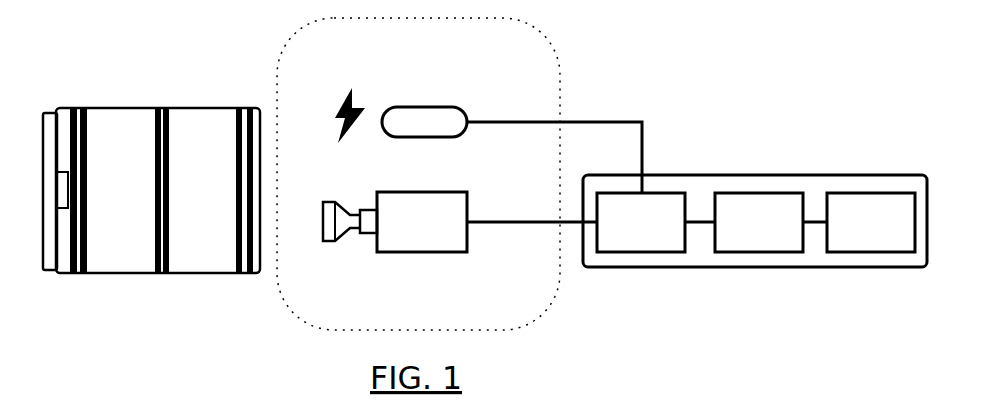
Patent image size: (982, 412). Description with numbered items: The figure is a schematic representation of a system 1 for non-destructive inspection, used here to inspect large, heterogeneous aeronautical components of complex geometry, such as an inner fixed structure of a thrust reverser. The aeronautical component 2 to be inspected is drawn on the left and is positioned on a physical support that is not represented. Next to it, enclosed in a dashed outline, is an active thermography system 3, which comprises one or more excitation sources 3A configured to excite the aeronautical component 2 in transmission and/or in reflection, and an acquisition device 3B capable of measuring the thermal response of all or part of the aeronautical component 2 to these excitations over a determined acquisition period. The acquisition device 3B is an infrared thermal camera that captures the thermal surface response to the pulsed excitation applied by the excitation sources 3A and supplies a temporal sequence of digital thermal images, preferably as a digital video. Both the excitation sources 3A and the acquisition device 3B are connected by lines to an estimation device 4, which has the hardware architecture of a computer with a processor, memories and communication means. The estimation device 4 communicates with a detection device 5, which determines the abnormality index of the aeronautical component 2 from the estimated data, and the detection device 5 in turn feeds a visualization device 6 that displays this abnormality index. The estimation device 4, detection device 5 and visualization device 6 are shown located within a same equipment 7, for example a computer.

The system for non-destructive inspection 1 is at (655, 65).
The aeronautical component 2 is at (130, 108).
The active thermography system 3 is at (550, 68).
The excitation source 3A is at (425, 107).
The acquisition device 3B is at (412, 252).
The estimation device 4 is at (641, 222).
The detection device 5 is at (759, 222).
The visualization device 6 is at (871, 222).
The equipment 7 is at (770, 175).